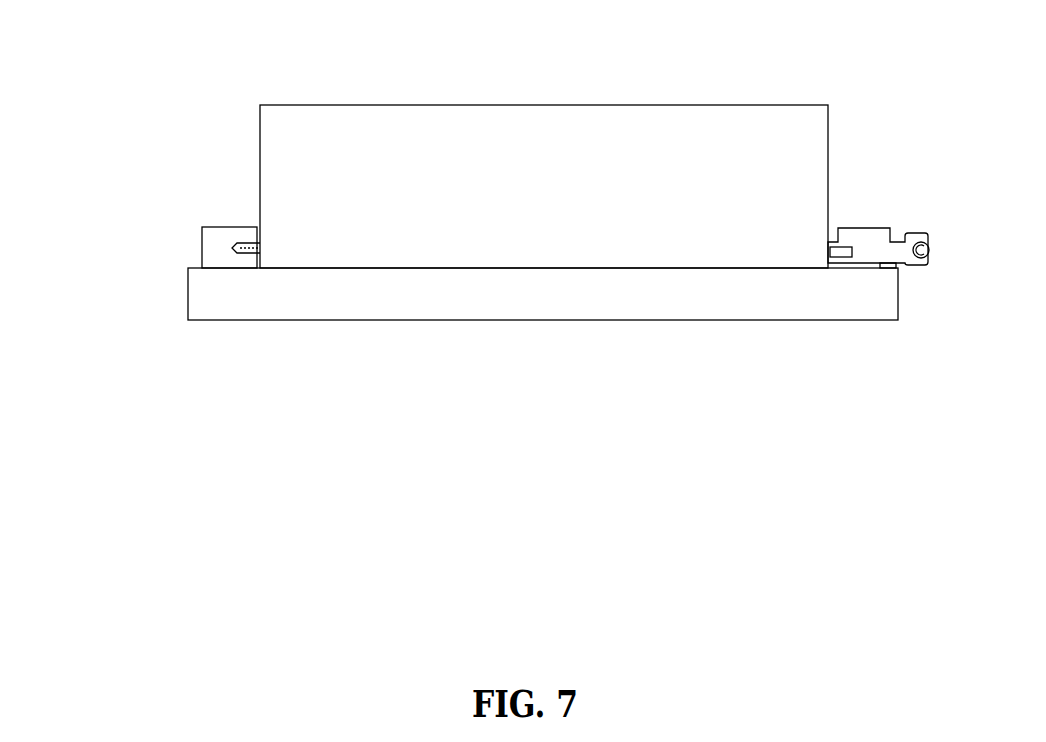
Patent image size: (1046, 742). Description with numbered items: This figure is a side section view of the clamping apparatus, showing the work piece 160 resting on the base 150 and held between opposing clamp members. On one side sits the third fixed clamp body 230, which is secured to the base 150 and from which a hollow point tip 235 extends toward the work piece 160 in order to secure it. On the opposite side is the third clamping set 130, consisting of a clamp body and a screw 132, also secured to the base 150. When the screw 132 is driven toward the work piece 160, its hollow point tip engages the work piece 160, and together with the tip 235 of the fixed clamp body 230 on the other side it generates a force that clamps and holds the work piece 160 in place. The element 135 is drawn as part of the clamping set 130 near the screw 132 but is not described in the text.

The third clamping set 130 is at (852, 233).
The screw 132 is at (878, 250).
The clamp tab 135 is at (837, 253).
The base 150 is at (450, 305).
The work piece 160 is at (470, 132).
The third fixed clamp body 230 is at (215, 247).
The hollow point tip 235 is at (245, 245).